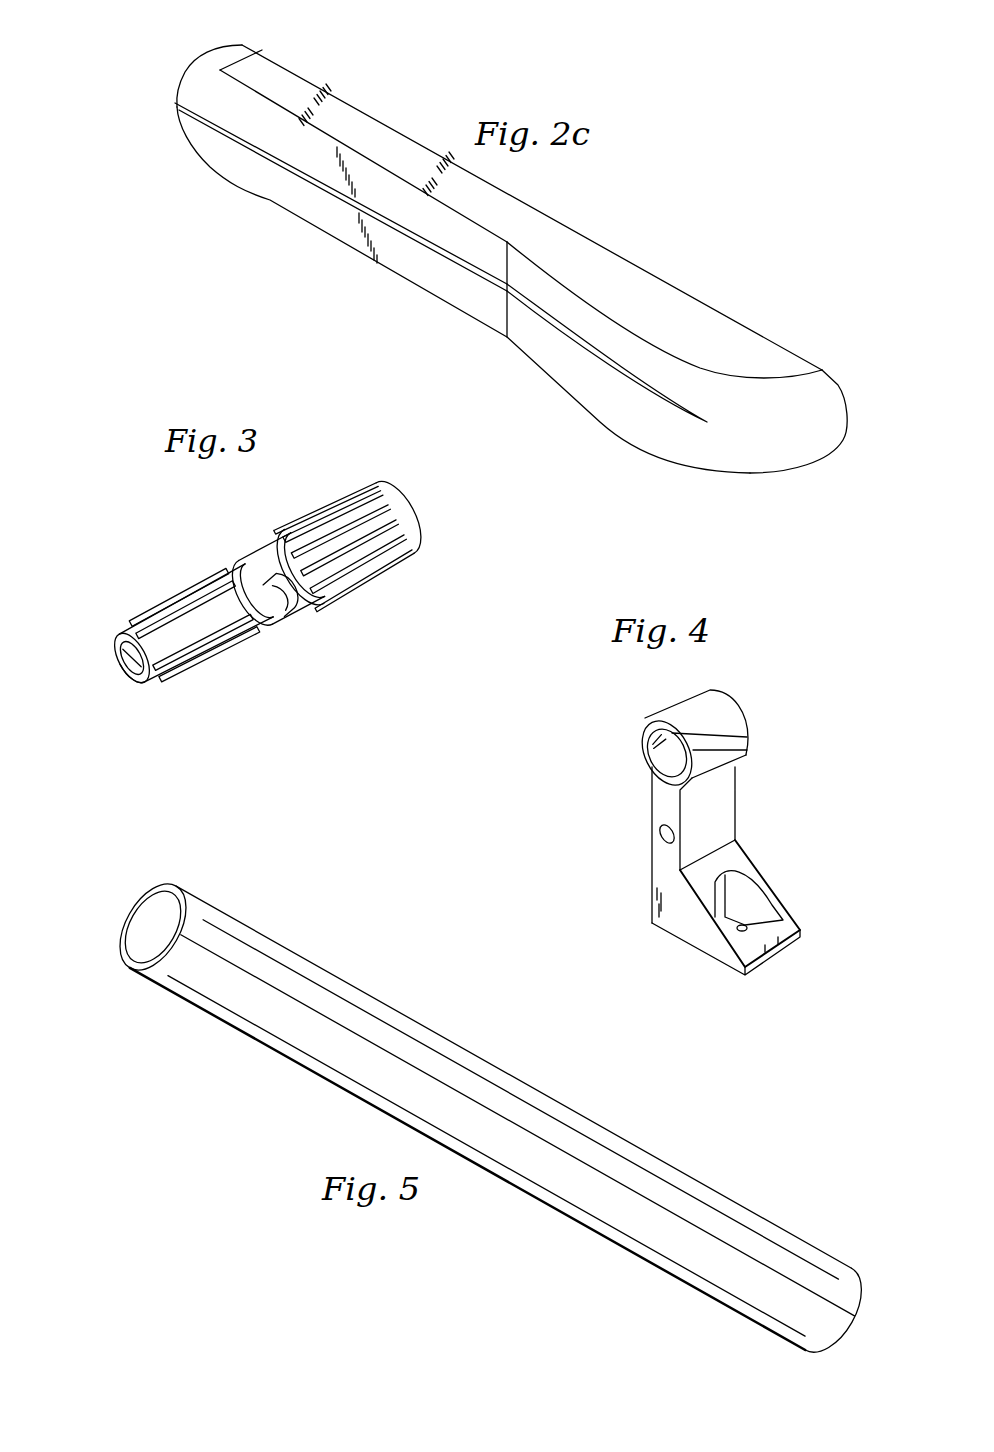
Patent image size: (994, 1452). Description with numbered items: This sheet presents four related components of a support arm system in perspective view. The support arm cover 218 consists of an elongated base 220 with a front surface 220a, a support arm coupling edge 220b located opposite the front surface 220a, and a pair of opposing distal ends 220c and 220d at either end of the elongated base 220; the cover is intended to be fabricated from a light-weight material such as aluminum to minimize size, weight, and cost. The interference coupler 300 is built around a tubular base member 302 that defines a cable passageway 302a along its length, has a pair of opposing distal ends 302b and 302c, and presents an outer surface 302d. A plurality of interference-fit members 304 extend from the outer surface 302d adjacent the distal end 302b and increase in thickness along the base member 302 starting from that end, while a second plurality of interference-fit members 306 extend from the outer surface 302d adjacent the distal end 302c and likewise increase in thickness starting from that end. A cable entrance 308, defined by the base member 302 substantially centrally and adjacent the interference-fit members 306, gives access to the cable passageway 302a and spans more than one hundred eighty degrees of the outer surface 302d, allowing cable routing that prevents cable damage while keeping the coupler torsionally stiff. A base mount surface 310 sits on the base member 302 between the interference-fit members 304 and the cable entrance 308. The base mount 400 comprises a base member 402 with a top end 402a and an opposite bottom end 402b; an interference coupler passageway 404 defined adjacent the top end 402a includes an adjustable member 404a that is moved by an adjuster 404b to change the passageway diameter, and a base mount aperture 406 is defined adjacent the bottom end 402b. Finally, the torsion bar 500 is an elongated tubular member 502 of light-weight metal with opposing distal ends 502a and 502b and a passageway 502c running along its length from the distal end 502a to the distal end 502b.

In FIG. 2C, the support arm cover 218 is at (619, 221).
In FIG. 2C, the elongated base 220 is at (435, 299).
In FIG. 2C, the front surface 220a is at (287, 193).
In FIG. 2C, the support arm coupling edge 220b is at (367, 107).
In FIG. 2C, the distal end 220c is at (210, 60).
In FIG. 2C, the distal end 220d is at (837, 440).
In FIG. 3, the interference coupler 300 is at (204, 524).
In FIG. 3, the tubular base member 302 is at (117, 633).
In FIG. 3, the cable passageway 302a is at (120, 670).
In FIG. 3, the distal end 302b is at (118, 647).
In FIG. 3, the distal end 302c is at (405, 490).
In FIG. 3, the outer surface 302d is at (227, 577).
In FIG. 3, the interference-fit members 304 is at (183, 603).
In FIG. 3, the interference-fit members 306 is at (328, 505).
In FIG. 3, the cable entrance 308 is at (290, 610).
In FIG. 3, the base mount surface 310 is at (233, 630).
In FIG. 4, the base mount 400 is at (797, 712).
In FIG. 4, the base member 402 is at (740, 804).
In FIG. 4, the top end 402a is at (718, 705).
In FIG. 4, the bottom end 402b is at (700, 953).
In FIG. 4, the interference coupler passageway 404 is at (636, 771).
In FIG. 4, the adjustable member 404a is at (642, 758).
In FIG. 4, the adjuster 404b is at (660, 838).
In FIG. 4, the base mount aperture 406 is at (746, 926).
In FIG. 5, the torsion bar 500 is at (505, 1218).
In FIG. 5, the elongated tubular member 502 is at (658, 1154).
In FIG. 5, the distal end 502a is at (122, 945).
In FIG. 5, the distal end 502b is at (850, 1333).
In FIG. 5, the passageway 502c is at (147, 900).